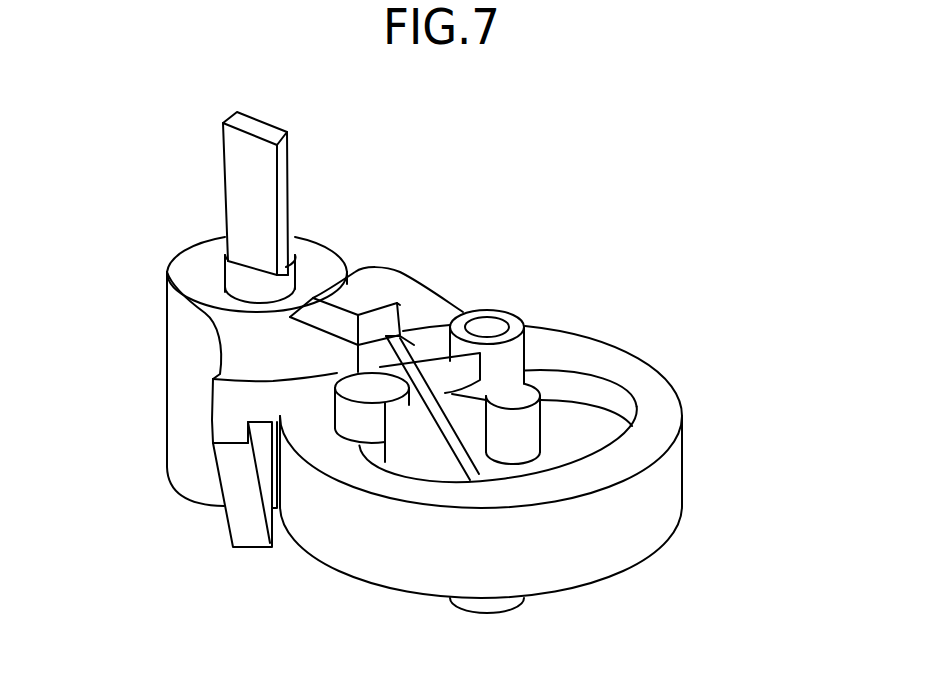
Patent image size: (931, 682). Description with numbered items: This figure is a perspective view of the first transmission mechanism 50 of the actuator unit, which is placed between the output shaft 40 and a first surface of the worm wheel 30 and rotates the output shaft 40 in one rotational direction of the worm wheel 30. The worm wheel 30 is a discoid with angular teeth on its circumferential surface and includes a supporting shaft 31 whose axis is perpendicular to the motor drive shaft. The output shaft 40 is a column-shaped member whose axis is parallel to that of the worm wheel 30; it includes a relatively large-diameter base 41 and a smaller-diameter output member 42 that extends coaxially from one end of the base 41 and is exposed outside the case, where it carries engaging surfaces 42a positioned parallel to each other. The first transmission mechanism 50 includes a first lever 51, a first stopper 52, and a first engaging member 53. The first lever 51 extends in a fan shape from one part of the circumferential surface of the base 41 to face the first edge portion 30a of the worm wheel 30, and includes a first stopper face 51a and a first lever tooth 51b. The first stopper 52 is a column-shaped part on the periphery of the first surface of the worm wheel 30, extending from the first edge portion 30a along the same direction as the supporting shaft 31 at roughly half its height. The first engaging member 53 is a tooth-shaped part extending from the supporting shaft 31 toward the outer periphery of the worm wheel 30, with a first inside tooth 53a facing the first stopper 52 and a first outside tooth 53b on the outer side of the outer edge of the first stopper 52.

The worm wheel 30 is at (537, 483).
The first edge portion 30a is at (667, 423).
The supporting shaft 31 is at (503, 320).
The output shaft 40 is at (207, 289).
The base 41 is at (183, 358).
The output member 42 is at (227, 174).
The engaging surfaces 42a is at (237, 167).
The first transmission mechanism 50 is at (439, 436).
The first lever 51 is at (210, 446).
The first stopper face 51a is at (293, 400).
The first lever tooth 51b is at (413, 293).
The first stopper 52 is at (350, 415).
The first engaging member 53 is at (590, 377).
The first inside tooth 53a is at (541, 385).
The first outside tooth 53b is at (468, 370).